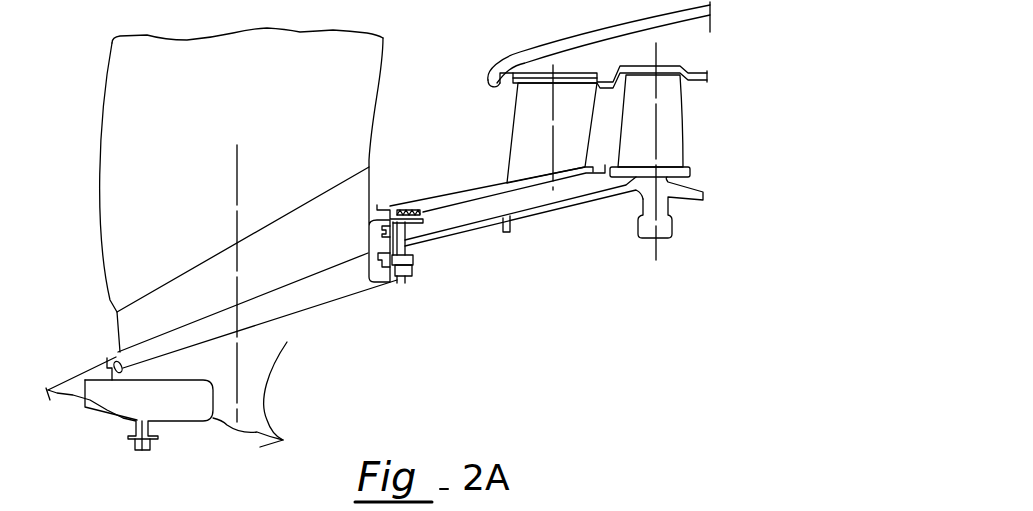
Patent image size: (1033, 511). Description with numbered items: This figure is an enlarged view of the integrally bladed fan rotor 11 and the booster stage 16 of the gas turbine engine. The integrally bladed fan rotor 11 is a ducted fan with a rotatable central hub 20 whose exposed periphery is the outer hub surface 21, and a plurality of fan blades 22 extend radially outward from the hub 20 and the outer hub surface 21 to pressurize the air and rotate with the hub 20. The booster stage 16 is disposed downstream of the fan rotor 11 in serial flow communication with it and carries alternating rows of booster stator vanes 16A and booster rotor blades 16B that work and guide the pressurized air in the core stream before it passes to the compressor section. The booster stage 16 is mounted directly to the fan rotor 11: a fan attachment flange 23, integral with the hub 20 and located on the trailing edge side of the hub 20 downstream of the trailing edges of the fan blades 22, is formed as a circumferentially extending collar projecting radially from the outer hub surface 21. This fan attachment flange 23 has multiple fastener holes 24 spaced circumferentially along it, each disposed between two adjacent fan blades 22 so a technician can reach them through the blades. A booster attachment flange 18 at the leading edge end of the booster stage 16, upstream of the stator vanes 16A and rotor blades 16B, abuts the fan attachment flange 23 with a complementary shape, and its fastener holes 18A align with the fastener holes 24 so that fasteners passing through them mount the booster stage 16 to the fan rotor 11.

The integrally bladed fan rotor 11 is at (112, 411).
The booster stage 16 is at (591, 265).
The booster stator vanes 16A is at (523, 131).
The booster rotor blades 16B is at (668, 126).
The booster attachment flange 18 is at (413, 247).
The fastener holes 18A is at (392, 208).
The hub 20 is at (263, 350).
The outer hub surface 21 is at (317, 304).
The fan blades 22 is at (140, 138).
The fan attachment flange 23 is at (407, 277).
The fastener holes 24 is at (412, 263).